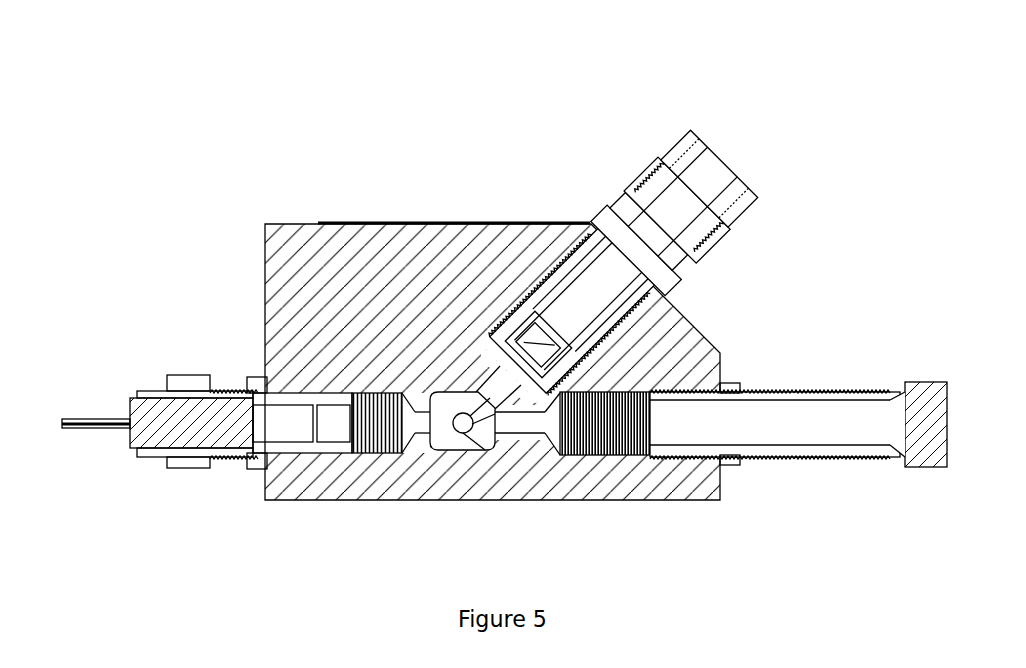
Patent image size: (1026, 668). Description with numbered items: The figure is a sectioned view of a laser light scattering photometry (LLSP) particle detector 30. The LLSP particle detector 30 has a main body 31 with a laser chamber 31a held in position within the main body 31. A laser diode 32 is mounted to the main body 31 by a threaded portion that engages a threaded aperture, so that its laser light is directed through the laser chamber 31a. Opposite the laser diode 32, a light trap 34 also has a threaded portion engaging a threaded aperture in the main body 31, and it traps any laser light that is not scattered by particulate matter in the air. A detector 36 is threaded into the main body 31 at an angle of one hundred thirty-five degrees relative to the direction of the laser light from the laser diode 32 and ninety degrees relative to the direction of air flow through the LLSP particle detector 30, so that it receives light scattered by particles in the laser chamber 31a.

The LLSP particle detector 30 is at (380, 105).
The main body 31 is at (392, 245).
The laser chamber 31a is at (467, 437).
The laser diode 32 is at (208, 360).
The light trap 34 is at (832, 388).
The detector 36 is at (645, 140).